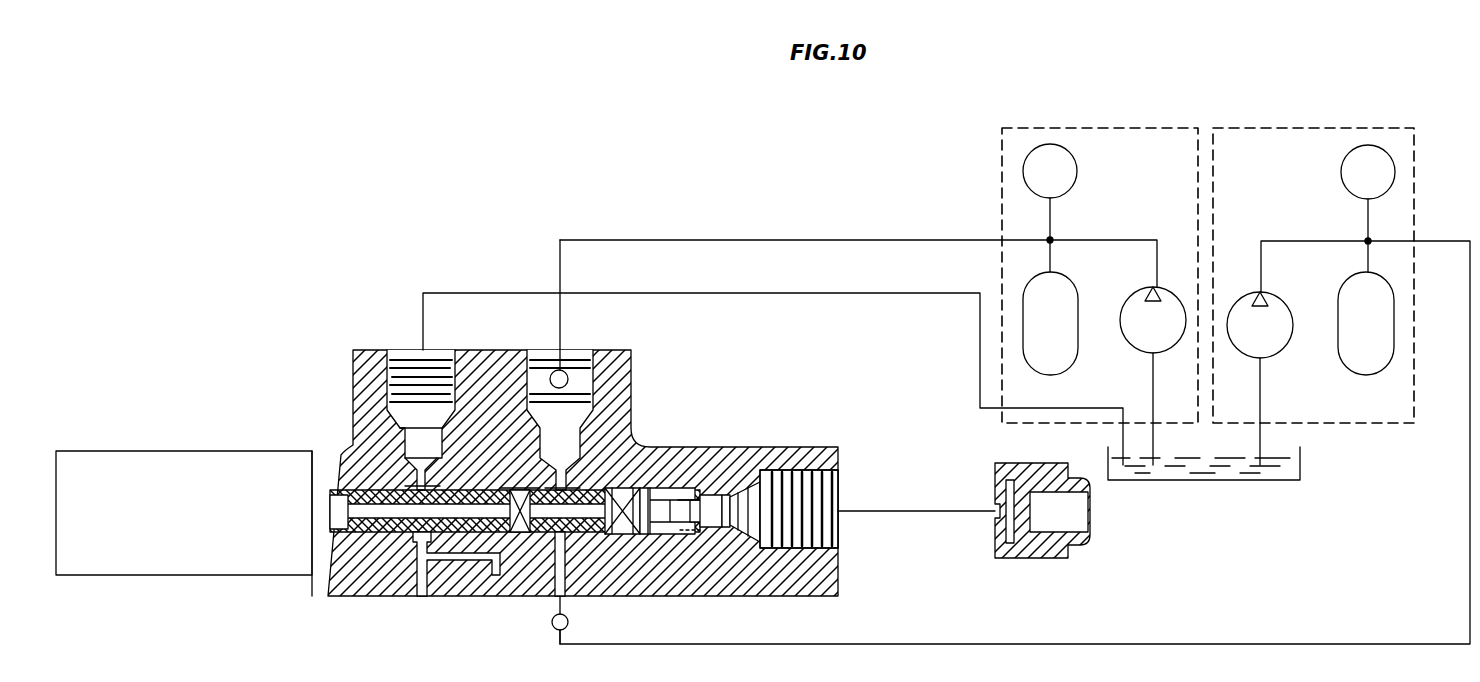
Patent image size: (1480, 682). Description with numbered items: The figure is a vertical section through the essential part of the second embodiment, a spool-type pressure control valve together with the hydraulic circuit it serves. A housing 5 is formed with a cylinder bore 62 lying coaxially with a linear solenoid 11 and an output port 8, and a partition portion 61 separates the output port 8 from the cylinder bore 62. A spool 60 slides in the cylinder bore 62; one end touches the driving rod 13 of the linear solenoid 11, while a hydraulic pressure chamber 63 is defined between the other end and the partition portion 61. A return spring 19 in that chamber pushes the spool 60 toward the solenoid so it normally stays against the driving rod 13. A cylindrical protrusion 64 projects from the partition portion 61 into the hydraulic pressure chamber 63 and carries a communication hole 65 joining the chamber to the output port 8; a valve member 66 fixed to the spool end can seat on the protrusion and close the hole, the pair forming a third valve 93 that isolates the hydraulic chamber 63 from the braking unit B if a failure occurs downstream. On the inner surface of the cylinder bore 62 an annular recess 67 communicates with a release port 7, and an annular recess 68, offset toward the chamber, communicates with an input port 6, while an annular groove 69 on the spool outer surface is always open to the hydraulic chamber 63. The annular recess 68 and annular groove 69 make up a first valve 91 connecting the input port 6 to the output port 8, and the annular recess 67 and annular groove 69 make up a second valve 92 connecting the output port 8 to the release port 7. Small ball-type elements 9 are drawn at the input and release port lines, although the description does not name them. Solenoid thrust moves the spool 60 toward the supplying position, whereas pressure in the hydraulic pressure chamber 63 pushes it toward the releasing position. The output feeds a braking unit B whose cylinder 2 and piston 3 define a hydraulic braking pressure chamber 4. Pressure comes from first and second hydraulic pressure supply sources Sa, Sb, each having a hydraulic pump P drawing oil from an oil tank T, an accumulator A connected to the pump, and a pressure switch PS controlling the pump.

The cylinder 2 is at (1058, 556).
The piston 3 is at (1080, 530).
The hydraulic braking pressure chamber 4 is at (998, 546).
The housing 5 is at (714, 450).
The input port 6 is at (582, 355).
The release port 7 is at (414, 352).
The output port 8 is at (838, 540).
The check valve 9 is at (555, 360).
The linear solenoid 11 is at (184, 504).
The driving rod 13 is at (322, 500).
The return spring 19 is at (652, 470).
The spool 60 is at (474, 488).
The partition portion 61 is at (737, 468).
The cylinder bore 62 is at (392, 532).
The hydraulic pressure chamber 63 is at (660, 534).
The cylindrical protrusion 64 is at (690, 534).
The communication hole 65 is at (752, 495).
The valve member 66 is at (612, 534).
The annular recess 67 is at (490, 548).
The annular recess 68 is at (580, 488).
The annular groove 69 is at (522, 488).
The first valve 91 is at (565, 575).
The second valve 92 is at (498, 455).
The third valve 93 is at (682, 470).
The accumulator A is at (1070, 290).
The braking unit B is at (1049, 532).
The hydraulic pump P is at (1128, 345).
The pressure switch PS is at (1077, 168).
The first hydraulic pressure supply source Sa is at (1198, 253).
The second hydraulic pressure supply source Sb is at (1292, 128).
The oil tank T is at (1220, 480).